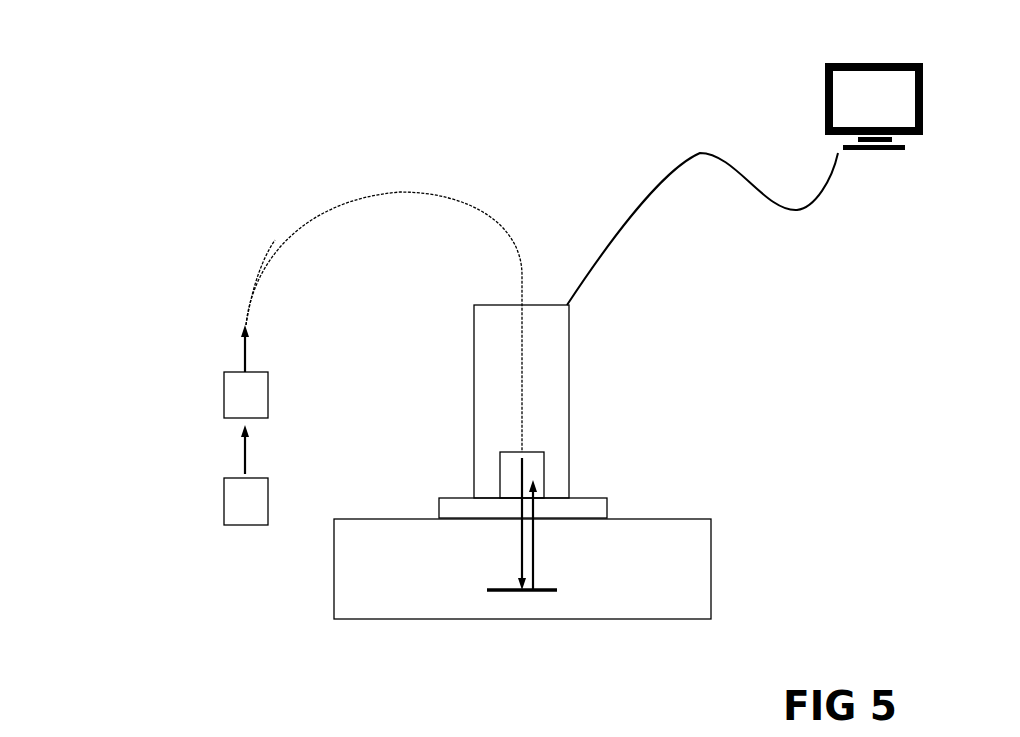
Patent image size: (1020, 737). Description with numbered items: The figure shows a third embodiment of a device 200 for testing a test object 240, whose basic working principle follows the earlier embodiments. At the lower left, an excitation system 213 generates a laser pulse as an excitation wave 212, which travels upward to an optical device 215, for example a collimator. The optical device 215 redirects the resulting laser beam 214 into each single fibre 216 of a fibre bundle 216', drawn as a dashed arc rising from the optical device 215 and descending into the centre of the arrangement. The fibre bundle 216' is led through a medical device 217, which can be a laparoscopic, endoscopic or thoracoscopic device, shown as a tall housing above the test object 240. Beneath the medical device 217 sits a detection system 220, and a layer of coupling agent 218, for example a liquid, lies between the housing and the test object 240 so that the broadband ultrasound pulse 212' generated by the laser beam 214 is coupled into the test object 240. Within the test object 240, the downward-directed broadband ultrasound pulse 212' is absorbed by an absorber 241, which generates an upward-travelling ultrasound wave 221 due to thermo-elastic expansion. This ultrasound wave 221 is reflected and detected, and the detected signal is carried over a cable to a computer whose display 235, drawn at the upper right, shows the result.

The device 200 is at (152, 70).
The fibre bundle 216' is at (370, 272).
The single fibre 216 is at (205, 232).
The laser beam 214 is at (240, 345).
The optical device 215 is at (222, 397).
The excitation wave 212 is at (141, 414).
The excitation system 213 is at (222, 507).
The medical device 217 is at (563, 355).
The display 235 is at (865, 84).
The detection system 220 is at (546, 480).
The coupling agent 218 is at (607, 510).
The test object 240 is at (710, 570).
The broadband ultrasound pulse 212' is at (302, 539).
The ultrasound wave 221 is at (536, 533).
The absorber 241 is at (558, 592).